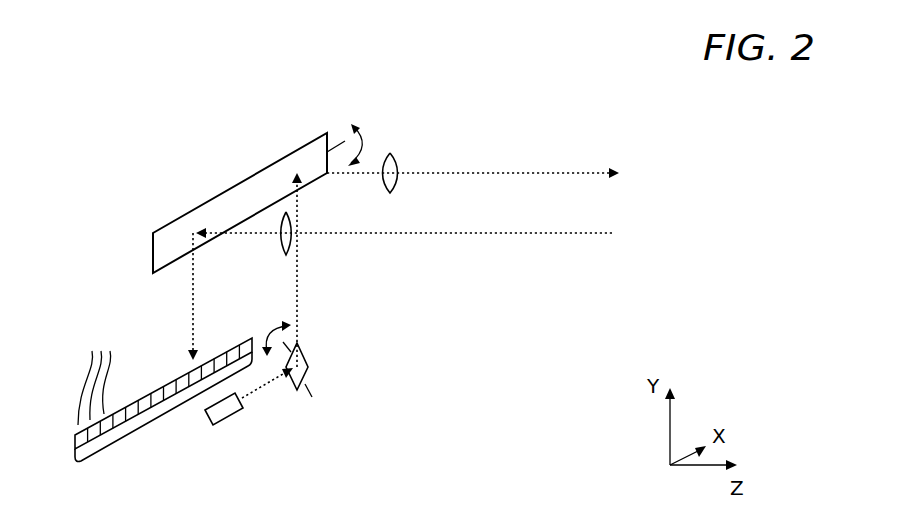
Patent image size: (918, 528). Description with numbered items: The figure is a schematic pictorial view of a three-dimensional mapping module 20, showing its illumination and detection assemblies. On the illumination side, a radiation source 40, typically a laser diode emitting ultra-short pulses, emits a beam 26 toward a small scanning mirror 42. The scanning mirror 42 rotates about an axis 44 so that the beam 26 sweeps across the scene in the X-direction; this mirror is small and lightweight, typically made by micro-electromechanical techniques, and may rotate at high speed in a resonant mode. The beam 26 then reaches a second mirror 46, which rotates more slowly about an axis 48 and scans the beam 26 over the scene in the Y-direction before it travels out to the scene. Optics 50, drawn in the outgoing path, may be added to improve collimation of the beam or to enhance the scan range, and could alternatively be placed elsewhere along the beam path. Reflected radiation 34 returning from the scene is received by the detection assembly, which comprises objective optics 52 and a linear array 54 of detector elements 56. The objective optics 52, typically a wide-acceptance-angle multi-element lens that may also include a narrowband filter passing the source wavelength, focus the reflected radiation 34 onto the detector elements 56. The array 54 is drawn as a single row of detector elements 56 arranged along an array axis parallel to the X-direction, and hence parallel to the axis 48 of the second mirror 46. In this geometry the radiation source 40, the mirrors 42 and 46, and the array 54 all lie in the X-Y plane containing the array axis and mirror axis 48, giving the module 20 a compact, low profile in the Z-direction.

The 3D mapping module 20 is at (123, 106).
The beam 26 is at (525, 173).
The reflected radiation 34 is at (525, 234).
The radiation source 40 is at (233, 413).
The scanning mirror 42 is at (306, 356).
The axis 44 is at (312, 397).
The second mirror 46 is at (233, 187).
The axis 48 is at (152, 254).
The optics 50 is at (389, 153).
The objective optics 52 is at (286, 255).
The linear array 54 is at (152, 427).
The detector elements 56 is at (95, 376).